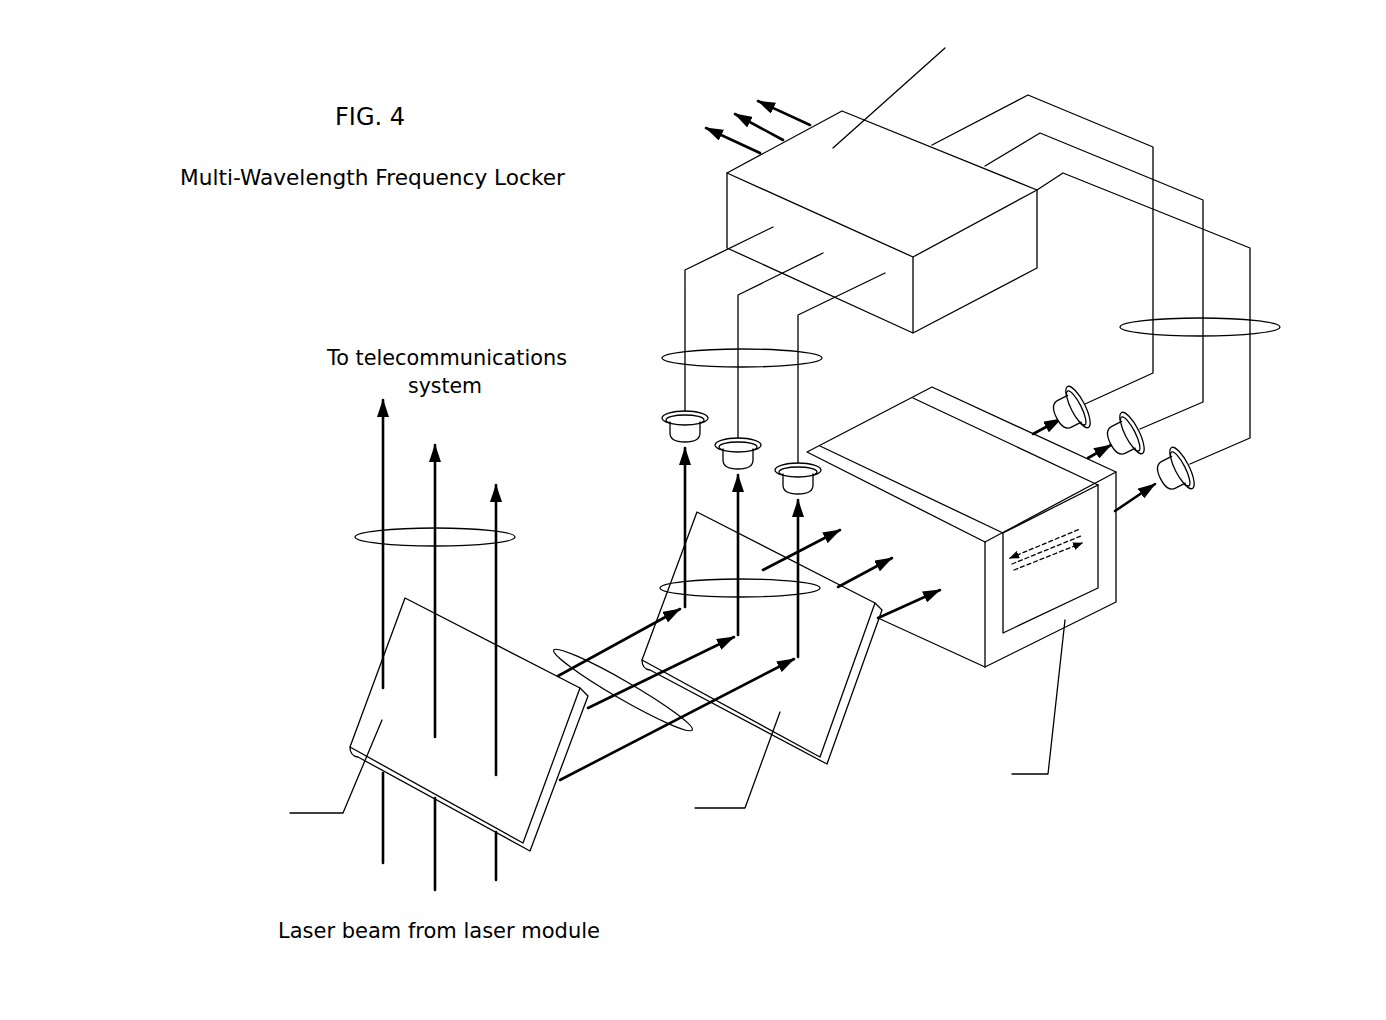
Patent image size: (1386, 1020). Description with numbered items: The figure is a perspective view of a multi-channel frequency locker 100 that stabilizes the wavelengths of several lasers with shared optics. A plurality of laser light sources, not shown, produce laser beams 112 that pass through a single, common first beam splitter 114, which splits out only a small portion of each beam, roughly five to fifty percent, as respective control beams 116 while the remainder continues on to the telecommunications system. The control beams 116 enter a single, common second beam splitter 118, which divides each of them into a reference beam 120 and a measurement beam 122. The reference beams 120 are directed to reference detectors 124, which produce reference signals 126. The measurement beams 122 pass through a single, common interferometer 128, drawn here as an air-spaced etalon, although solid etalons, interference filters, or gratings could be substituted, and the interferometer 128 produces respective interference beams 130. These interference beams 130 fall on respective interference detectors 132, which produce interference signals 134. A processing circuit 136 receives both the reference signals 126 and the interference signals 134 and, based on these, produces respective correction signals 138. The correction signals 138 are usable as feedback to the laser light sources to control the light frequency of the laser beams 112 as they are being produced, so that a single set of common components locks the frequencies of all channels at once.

The multi-channel frequency locker 100 is at (1249, 826).
The laser beams 112 is at (358, 537).
The first beam splitter 114 is at (558, 717).
The control beams 116 is at (548, 650).
The second beam splitter 118 is at (858, 632).
The reference beams 120 is at (660, 588).
The measurement beams 122 is at (894, 651).
The reference detectors 124 is at (678, 413).
The reference signals 126 is at (662, 358).
The interferometer 128 is at (984, 472).
The interference beams 130 is at (1147, 520).
The interference detectors 132 is at (1066, 395).
The interference signals 134 is at (1280, 327).
The processing circuit 136 is at (918, 199).
The correction signals 138 is at (725, 161).